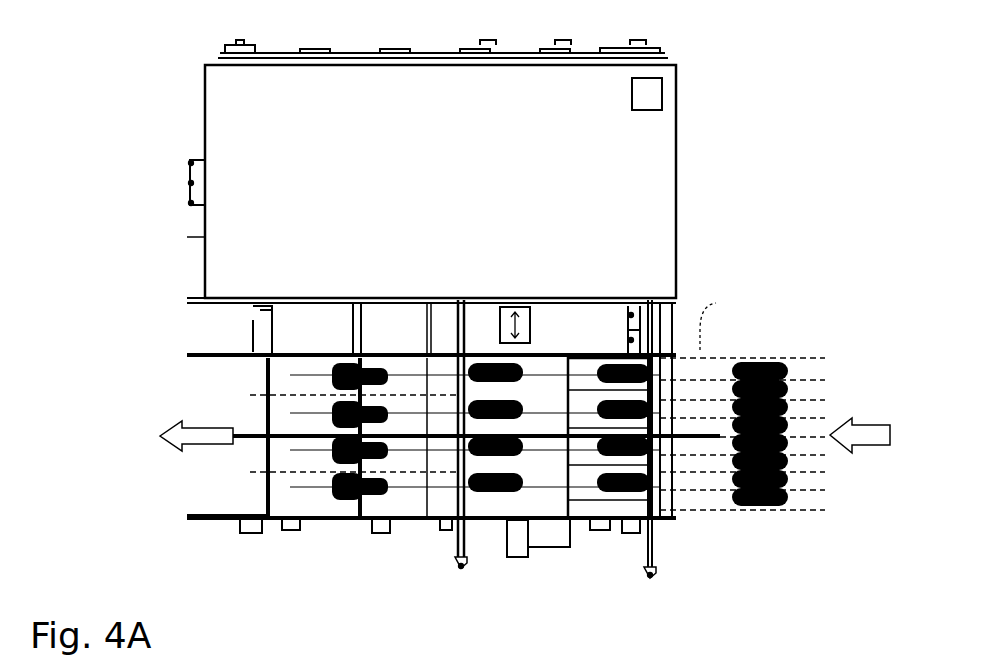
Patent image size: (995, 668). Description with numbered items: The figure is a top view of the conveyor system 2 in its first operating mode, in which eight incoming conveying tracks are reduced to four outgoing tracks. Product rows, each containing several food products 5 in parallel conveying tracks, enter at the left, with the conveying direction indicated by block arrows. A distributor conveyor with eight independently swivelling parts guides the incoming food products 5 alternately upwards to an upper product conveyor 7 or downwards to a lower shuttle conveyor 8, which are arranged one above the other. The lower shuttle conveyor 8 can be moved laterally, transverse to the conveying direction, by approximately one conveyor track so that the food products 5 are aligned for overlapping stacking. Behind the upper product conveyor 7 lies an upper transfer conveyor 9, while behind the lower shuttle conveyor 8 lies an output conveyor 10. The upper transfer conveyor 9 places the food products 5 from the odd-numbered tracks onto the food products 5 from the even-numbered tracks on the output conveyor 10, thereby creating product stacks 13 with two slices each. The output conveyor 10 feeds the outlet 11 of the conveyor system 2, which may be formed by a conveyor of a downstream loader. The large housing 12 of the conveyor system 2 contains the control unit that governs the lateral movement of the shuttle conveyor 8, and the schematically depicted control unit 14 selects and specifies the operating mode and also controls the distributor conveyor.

The conveyor system 2 is at (168, 211).
The housing 12 is at (238, 131).
The control unit 14 is at (662, 88).
The outlet 11 is at (213, 497).
The output conveyor 10 is at (318, 505).
The product stacks 13 is at (352, 500).
The upper transfer conveyor 9 is at (410, 500).
The food products 5 is at (762, 362).
The upper product conveyor 7 is at (530, 505).
The lower shuttle conveyor 8 is at (517, 542).